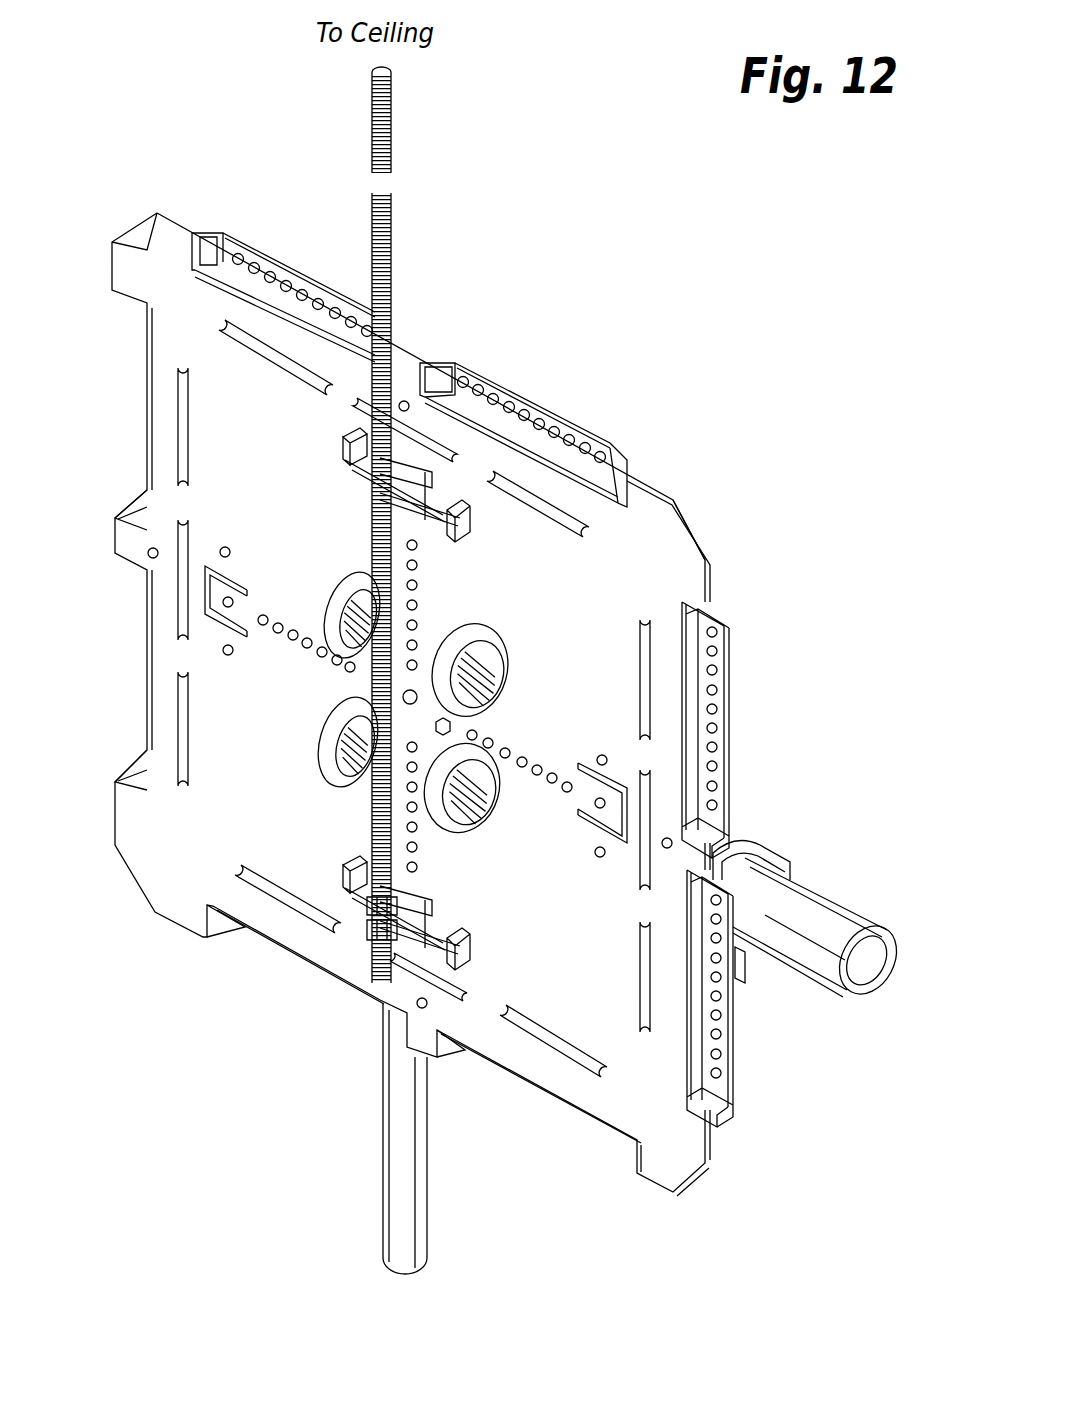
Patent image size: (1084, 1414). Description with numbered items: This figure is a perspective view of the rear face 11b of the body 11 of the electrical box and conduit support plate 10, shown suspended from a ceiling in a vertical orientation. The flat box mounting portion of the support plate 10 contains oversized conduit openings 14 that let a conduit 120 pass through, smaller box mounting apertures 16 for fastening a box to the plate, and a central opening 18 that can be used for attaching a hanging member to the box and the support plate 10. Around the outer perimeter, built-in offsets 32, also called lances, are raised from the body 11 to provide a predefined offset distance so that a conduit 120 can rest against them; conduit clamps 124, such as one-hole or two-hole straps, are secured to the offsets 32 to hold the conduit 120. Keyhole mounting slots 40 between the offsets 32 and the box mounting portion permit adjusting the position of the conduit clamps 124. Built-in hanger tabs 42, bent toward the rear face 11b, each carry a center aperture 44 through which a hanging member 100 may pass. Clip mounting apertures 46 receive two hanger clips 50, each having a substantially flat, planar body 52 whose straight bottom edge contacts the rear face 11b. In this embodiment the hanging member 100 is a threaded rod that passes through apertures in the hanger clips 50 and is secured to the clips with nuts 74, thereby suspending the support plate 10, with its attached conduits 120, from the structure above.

The support plate 10 is at (443, 696).
The body 11 is at (700, 498).
The rear face 11b is at (676, 542).
The conduit openings 14 is at (335, 582).
The box mounting apertures 16 is at (418, 585).
The central opening 18 is at (413, 692).
The built-in offsets 32 is at (284, 234).
The mounting slots 40 is at (262, 345).
The hanger tabs 42 is at (240, 618).
The center aperture 44 is at (232, 598).
The clip mounting apertures 46 is at (225, 548).
The hanger clip 50 is at (347, 494).
The body 52 is at (345, 455).
The nuts 74 is at (370, 923).
The hanging member 100 is at (416, 230).
The conduit 120 is at (832, 918).
The conduit clamps 124 is at (765, 860).